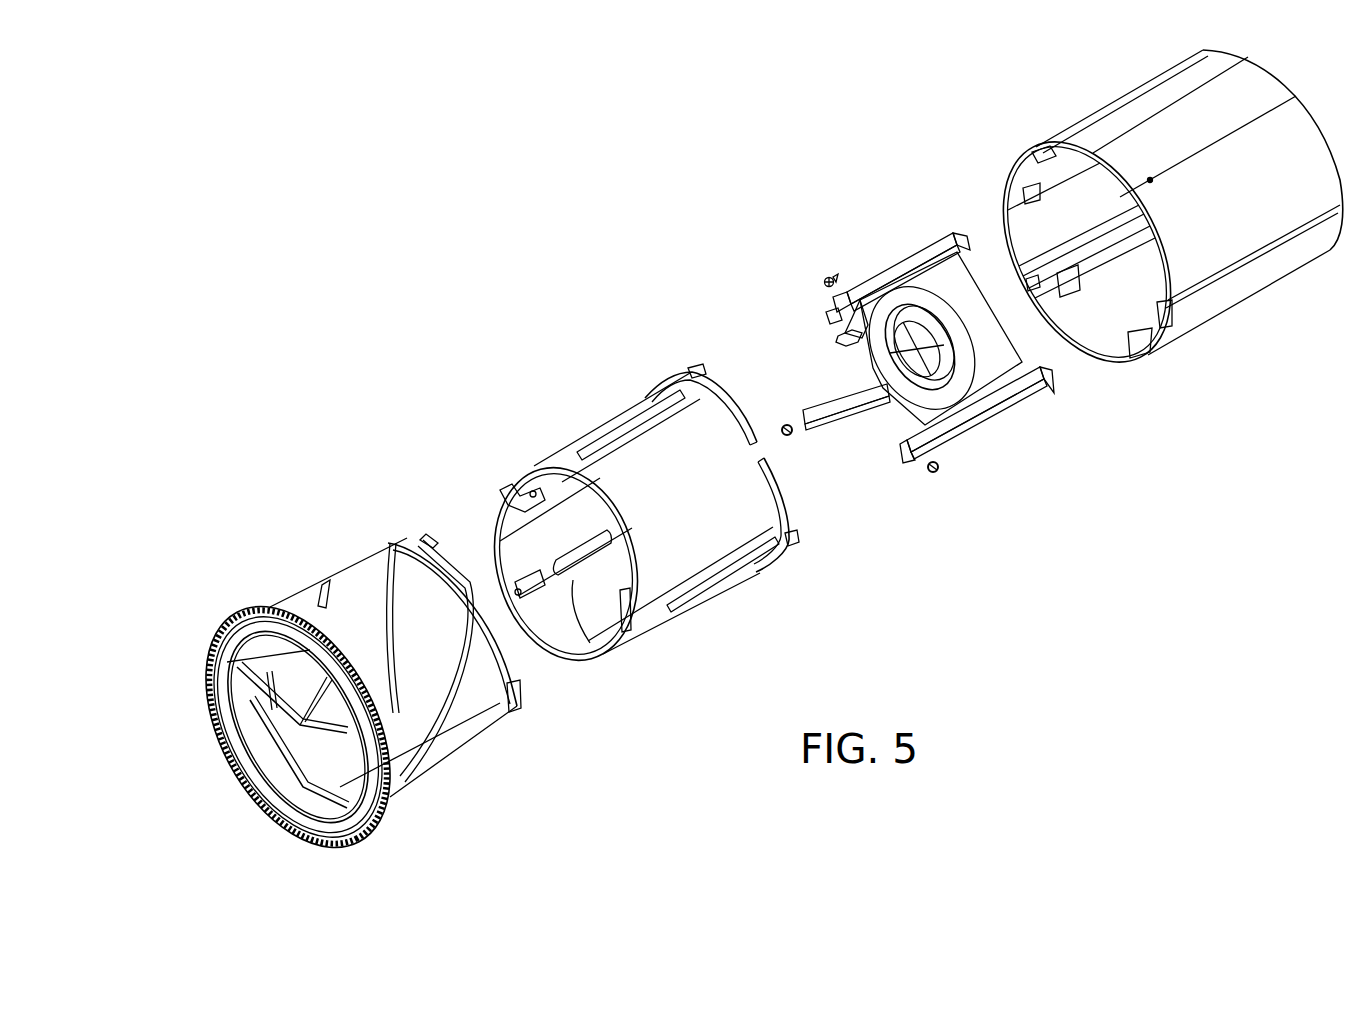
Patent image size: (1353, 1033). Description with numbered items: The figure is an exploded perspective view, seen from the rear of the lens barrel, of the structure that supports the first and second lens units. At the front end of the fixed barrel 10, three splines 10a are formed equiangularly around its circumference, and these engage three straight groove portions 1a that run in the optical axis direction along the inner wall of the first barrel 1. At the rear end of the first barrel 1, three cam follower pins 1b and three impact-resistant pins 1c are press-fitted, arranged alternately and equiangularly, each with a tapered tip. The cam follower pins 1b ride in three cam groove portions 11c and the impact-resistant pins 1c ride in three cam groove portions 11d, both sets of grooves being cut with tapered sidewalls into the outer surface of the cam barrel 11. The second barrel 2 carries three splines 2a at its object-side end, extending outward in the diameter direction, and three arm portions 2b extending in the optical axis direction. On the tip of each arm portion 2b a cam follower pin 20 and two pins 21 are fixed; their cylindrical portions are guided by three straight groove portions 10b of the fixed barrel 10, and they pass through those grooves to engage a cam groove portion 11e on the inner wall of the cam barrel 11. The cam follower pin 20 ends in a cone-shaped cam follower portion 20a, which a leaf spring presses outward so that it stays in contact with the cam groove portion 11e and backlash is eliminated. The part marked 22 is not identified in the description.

The first barrel 1 is at (1134, 82).
The straight groove portion 1a is at (1037, 152).
The cam follower pin 1b is at (1028, 186).
The impact-resistant pin 1c is at (1071, 318).
The second barrel 2 is at (889, 265).
The spline 2a is at (948, 224).
The arm portion 2b is at (829, 316).
The cam follower pin 20 is at (825, 280).
The cam follower portion 20a is at (830, 277).
The pin 21 is at (791, 436).
The engagement piece 22 is at (838, 340).
The fixed barrel 10 is at (557, 447).
The spline 10a is at (695, 368).
The straight groove portion 10b is at (620, 410).
The cam barrel 11 is at (342, 567).
The cam groove portion 11c is at (390, 543).
The cam groove portion 11d is at (318, 606).
The cam groove portion 11e is at (217, 663).